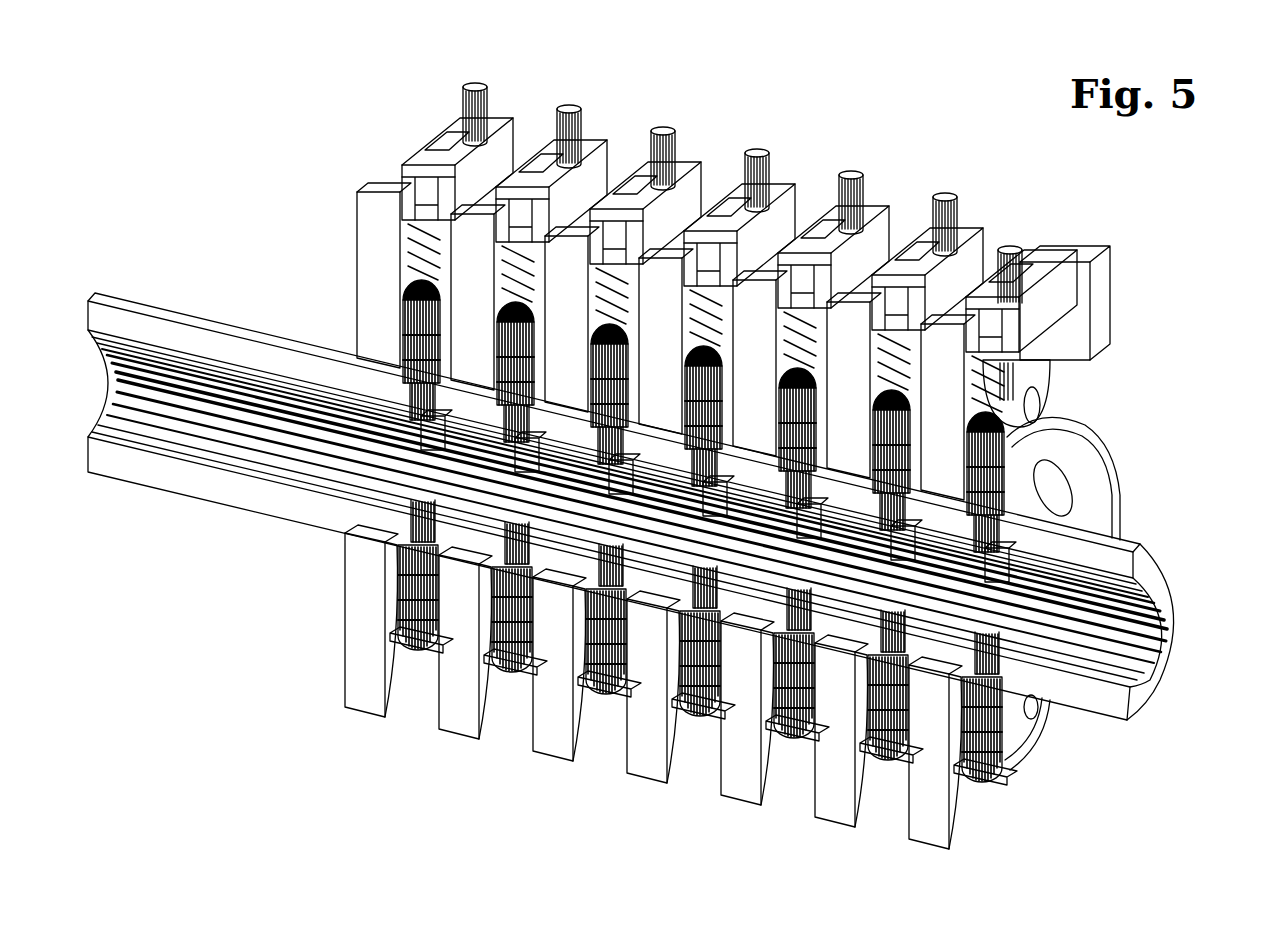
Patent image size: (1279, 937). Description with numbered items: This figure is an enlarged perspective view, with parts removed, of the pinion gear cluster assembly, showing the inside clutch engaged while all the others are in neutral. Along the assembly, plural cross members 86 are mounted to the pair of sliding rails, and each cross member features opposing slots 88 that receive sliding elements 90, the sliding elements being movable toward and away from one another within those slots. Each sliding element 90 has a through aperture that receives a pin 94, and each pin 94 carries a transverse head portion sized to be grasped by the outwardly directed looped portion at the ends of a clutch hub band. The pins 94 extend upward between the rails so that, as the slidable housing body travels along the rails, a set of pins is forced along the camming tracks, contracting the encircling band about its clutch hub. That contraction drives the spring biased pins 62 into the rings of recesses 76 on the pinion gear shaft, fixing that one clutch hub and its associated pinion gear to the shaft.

The spring biased pin 62 is at (1097, 530).
The rings of recesses 76 is at (403, 538).
The cross member 86 is at (1083, 310).
The opposing slots 88 is at (1007, 357).
The sliding element 90 is at (1028, 265).
The pin 94 is at (586, 110).